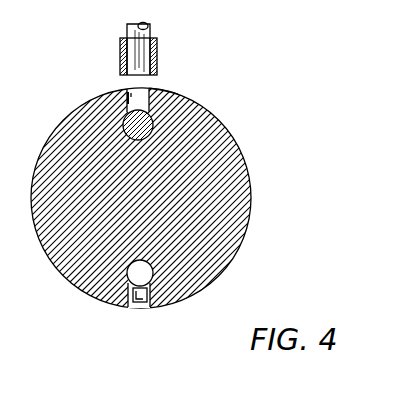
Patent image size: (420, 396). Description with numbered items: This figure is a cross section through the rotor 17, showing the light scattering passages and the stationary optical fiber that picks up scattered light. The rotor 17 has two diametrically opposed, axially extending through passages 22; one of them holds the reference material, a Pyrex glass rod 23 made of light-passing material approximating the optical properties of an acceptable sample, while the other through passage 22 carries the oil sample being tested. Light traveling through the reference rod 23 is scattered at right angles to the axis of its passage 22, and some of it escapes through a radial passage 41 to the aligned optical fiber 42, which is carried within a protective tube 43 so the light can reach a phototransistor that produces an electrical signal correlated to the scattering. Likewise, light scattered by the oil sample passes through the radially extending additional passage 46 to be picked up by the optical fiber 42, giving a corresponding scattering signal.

The rotor 17 is at (223, 180).
The through passage 22 is at (151, 114).
The Pyrex glass rod 23 is at (180, 93).
The radial passage 41 is at (125, 93).
The optical fiber 42 is at (143, 32).
The protective tube 43 is at (120, 60).
The radially extending additional passage 46 is at (150, 307).